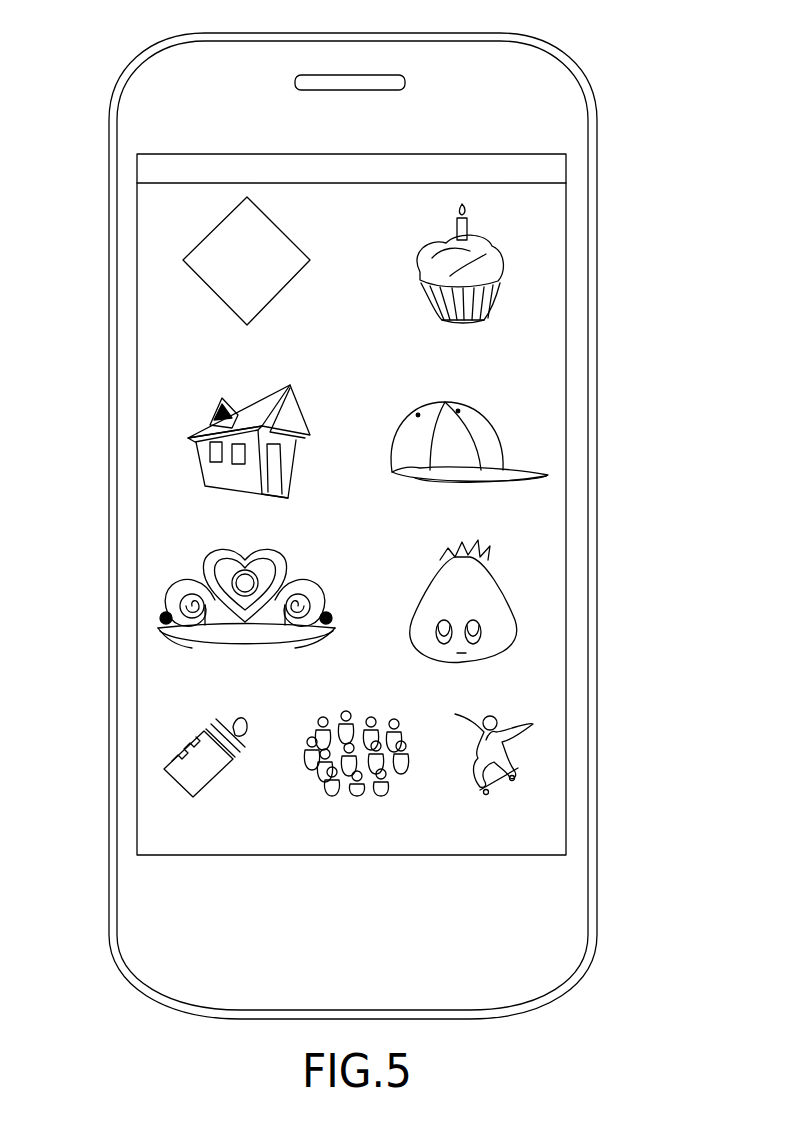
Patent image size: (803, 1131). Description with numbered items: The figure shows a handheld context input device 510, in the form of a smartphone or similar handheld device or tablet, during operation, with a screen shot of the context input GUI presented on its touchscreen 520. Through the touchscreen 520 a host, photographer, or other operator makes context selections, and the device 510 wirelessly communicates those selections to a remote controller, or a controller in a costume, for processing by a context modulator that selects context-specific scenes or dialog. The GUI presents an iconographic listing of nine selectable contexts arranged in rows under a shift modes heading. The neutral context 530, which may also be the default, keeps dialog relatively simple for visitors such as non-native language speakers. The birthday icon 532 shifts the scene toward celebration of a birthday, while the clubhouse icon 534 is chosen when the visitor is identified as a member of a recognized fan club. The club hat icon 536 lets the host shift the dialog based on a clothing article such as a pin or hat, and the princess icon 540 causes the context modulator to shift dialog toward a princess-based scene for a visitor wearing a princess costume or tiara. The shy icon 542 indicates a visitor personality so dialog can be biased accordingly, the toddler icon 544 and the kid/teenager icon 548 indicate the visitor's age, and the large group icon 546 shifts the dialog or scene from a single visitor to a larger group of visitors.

The context input device 510 is at (642, 85).
The touchscreen 520 is at (558, 221).
The neutral context icon 530 is at (192, 273).
The birthday icon 532 is at (501, 289).
The clubhouse icon 534 is at (193, 426).
The club hat icon 536 is at (500, 432).
The princess icon 540 is at (172, 585).
The shy context icon 542 is at (516, 618).
The toddler icon 544 is at (228, 770).
The large group icon 546 is at (370, 712).
The kid/teenager icon 548 is at (516, 748).